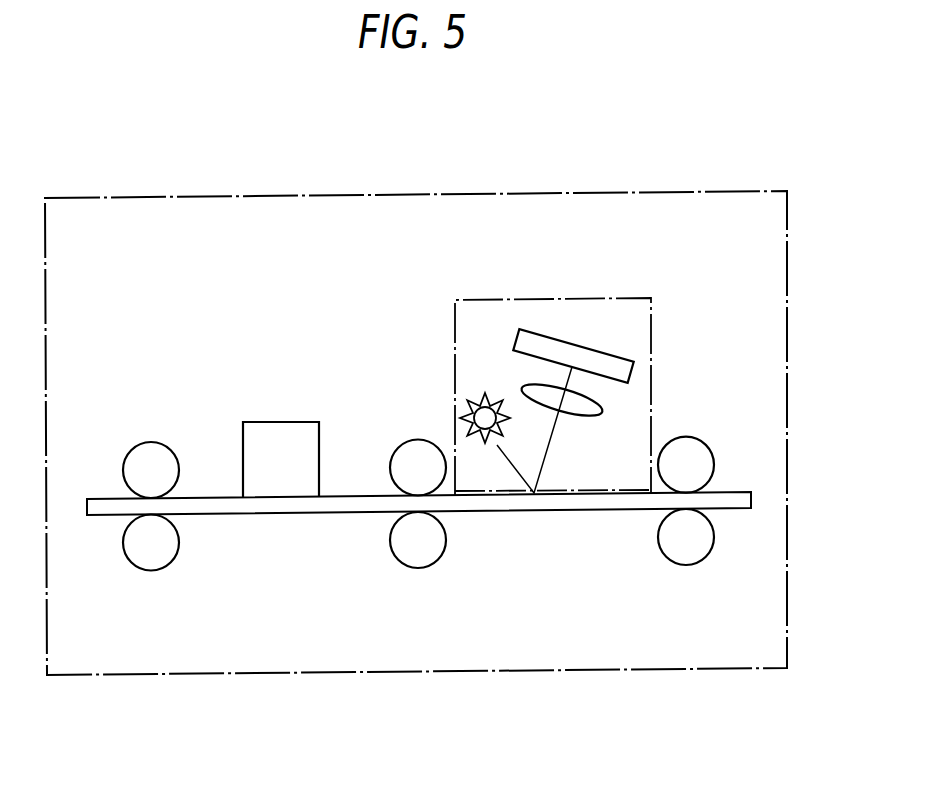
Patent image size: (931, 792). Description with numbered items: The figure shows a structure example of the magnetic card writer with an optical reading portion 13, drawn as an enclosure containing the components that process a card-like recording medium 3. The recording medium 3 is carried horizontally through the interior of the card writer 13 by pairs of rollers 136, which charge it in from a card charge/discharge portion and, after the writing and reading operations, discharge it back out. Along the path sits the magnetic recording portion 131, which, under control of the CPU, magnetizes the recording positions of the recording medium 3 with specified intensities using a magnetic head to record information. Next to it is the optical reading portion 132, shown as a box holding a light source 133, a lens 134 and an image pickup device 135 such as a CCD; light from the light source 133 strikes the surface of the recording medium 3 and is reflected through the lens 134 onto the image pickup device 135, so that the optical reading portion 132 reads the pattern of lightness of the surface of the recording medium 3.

The magnetic card writer with an optical reading portion 13 is at (675, 190).
The recording medium 3 is at (735, 490).
The rollers 136 is at (150, 441).
The magnetic recording portion 131 is at (278, 421).
The optical reading portion 132 is at (593, 298).
The light source 133 is at (462, 418).
The lens 134 is at (603, 412).
The image pickup device 135 is at (627, 357).